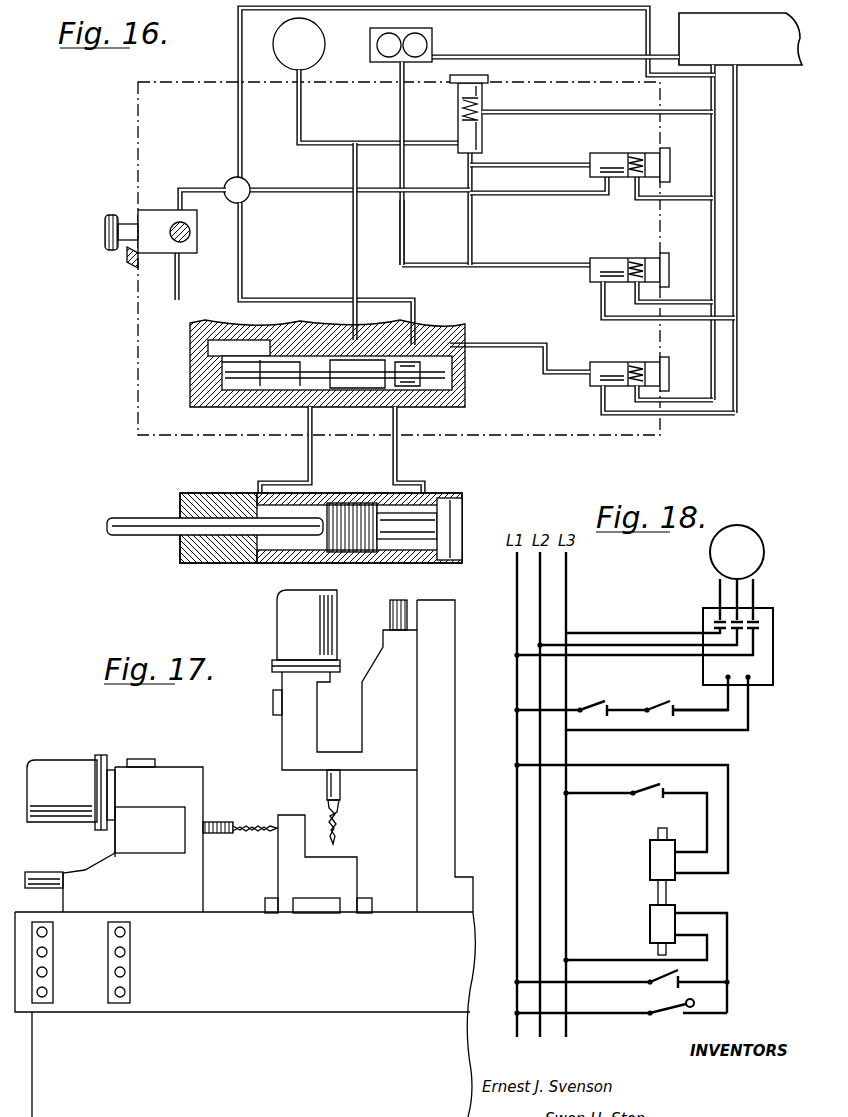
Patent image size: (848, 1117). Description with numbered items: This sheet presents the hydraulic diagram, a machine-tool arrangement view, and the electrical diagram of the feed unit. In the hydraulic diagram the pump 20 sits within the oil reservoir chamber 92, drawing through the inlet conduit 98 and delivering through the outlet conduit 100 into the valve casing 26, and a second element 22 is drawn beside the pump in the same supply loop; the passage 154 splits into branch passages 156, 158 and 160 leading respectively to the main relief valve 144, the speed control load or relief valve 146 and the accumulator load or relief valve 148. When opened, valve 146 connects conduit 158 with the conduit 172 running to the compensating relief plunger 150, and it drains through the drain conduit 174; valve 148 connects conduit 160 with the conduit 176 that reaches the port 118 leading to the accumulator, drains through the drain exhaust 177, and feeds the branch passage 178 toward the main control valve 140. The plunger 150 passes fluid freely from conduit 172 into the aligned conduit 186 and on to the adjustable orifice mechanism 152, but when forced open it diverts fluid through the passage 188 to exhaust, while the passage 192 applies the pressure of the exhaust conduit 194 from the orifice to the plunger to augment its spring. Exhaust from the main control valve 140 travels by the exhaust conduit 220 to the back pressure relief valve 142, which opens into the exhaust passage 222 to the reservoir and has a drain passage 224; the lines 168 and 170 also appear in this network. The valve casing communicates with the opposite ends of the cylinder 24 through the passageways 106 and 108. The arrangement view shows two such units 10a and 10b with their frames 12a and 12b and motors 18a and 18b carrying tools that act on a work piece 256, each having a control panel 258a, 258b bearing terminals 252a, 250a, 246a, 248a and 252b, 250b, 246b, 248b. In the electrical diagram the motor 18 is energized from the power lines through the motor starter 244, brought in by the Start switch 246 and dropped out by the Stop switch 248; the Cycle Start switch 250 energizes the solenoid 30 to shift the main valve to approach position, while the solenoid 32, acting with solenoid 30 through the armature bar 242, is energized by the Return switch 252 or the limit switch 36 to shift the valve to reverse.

In FIG. 16, the valve casing 26 is at (138, 392).
In FIG. 16, the oil reservoir chamber 92 is at (772, 54).
In FIG. 16, the inlet conduit 98 is at (529, 56).
In FIG. 16, the pump 22 is at (325, 46).
In FIG. 16, the pump 20 is at (432, 42).
In FIG. 16, the port 118 is at (284, 80).
In FIG. 16, the outlet conduit 100 is at (396, 76).
In FIG. 16, the branch passage 156 is at (518, 268).
In FIG. 16, the passage 154 is at (405, 236).
In FIG. 16, the branch passage 160 is at (467, 158).
In FIG. 16, the compensating relief plunger 150 is at (246, 200).
In FIG. 16, the conduit 186 is at (203, 186).
In FIG. 16, the passage 188 is at (243, 167).
In FIG. 16, the passage 192 is at (243, 270).
In FIG. 16, the exhaust conduit 194 is at (197, 298).
In FIG. 16, the branch passage 178 is at (352, 243).
In FIG. 16, the adjustable orifice mechanism 152 is at (155, 210).
In FIG. 16, the conduit 176 is at (427, 142).
In FIG. 16, the accumulator load or relief valve 148 is at (490, 80).
In FIG. 16, the drain exhaust 177 is at (519, 110).
In FIG. 16, the branch passage 158 is at (527, 162).
In FIG. 16, the conduit 172 is at (527, 197).
In FIG. 16, the drain conduit 174 is at (633, 200).
In FIG. 16, the speed control load or relief valve 146 is at (666, 150).
In FIG. 16, the main relief valve 144 is at (667, 253).
In FIG. 16, the back pressure relief valve 142 is at (667, 357).
In FIG. 16, the conduit 168 is at (600, 302).
In FIG. 16, the conduit 170 is at (636, 306).
In FIG. 16, the exhaust conduit 220 is at (516, 344).
In FIG. 16, the exhaust passage 222 is at (598, 404).
In FIG. 16, the drain passage 224 is at (646, 404).
In FIG. 16, the main control valve 140 is at (288, 386).
In FIG. 16, the passageway 108 is at (313, 460).
In FIG. 16, the passageway 106 is at (398, 460).
In FIG. 16, the cylinder 24 is at (350, 563).
In FIG. 17, the motor 18a is at (53, 766).
In FIG. 17, the frame 12a is at (163, 770).
In FIG. 17, the unit 10a is at (185, 874).
In FIG. 17, the motor 18b is at (290, 613).
In FIG. 17, the frame 12b is at (293, 724).
In FIG. 17, the unit 10b is at (391, 768).
In FIG. 17, the work piece 256 is at (350, 866).
In FIG. 17, the control panel 258a is at (42, 1003).
In FIG. 17, the control panel 258b is at (118, 1003).
In FIG. 17, the terminal 252a is at (47, 932).
In FIG. 17, the terminal 250a is at (47, 952).
In FIG. 17, the terminal 246a is at (47, 972).
In FIG. 17, the terminal 248a is at (47, 992).
In FIG. 17, the terminal 252b is at (125, 932).
In FIG. 17, the terminal 250b is at (125, 952).
In FIG. 17, the terminal 246b is at (125, 972).
In FIG. 17, the terminal 248b is at (125, 992).
In FIG. 18, the motor 18 is at (708, 554).
In FIG. 18, the motor starter 244 is at (703, 617).
In FIG. 18, the Stop switch 248 is at (602, 710).
In FIG. 18, the Start switch 246 is at (668, 710).
In FIG. 18, the Cycle Start switch 250 is at (640, 789).
In FIG. 18, the solenoid 30 is at (650, 860).
In FIG. 18, the armature bar 242 is at (658, 886).
In FIG. 18, the solenoid 32 is at (650, 923).
In FIG. 18, the Return switch 252 is at (656, 992).
In FIG. 18, the limit switch 36 is at (664, 1018).